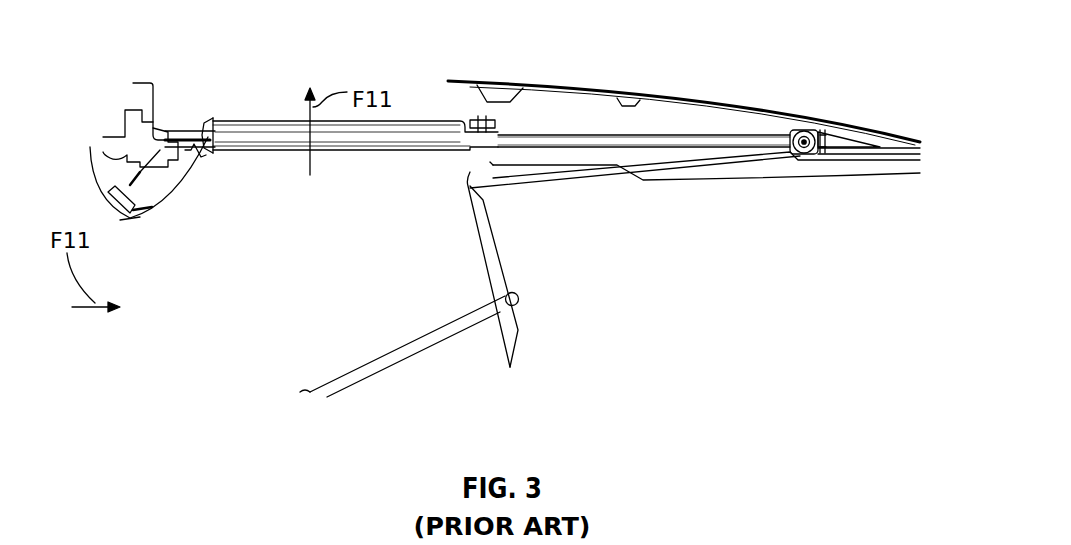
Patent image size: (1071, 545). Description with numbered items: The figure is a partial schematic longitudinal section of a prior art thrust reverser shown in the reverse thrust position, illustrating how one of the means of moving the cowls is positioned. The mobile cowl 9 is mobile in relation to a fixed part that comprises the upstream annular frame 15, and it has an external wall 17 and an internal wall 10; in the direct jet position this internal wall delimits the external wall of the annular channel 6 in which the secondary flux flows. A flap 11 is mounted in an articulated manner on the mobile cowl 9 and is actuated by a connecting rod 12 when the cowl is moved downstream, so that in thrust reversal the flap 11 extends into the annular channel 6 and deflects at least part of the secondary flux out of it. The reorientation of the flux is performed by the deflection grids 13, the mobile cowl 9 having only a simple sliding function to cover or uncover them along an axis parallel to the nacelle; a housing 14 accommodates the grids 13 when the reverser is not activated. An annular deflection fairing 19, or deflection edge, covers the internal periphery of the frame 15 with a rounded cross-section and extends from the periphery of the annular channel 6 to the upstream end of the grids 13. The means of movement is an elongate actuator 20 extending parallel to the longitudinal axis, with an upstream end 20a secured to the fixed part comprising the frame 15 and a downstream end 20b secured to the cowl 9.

The annular channel 6 is at (639, 277).
The mobile cowl 9 is at (737, 118).
The internal wall 10 is at (752, 174).
The flap 11 is at (497, 273).
The connecting rod 12 is at (432, 340).
The deflection grids 13 is at (370, 125).
The housing 14 is at (553, 157).
The upstream annular frame 15 is at (155, 93).
The external wall 17 is at (568, 85).
The annular deflection fairing 19 is at (168, 202).
The actuator 20 is at (410, 152).
The upstream end 20a is at (118, 138).
The downstream end 20b is at (803, 130).